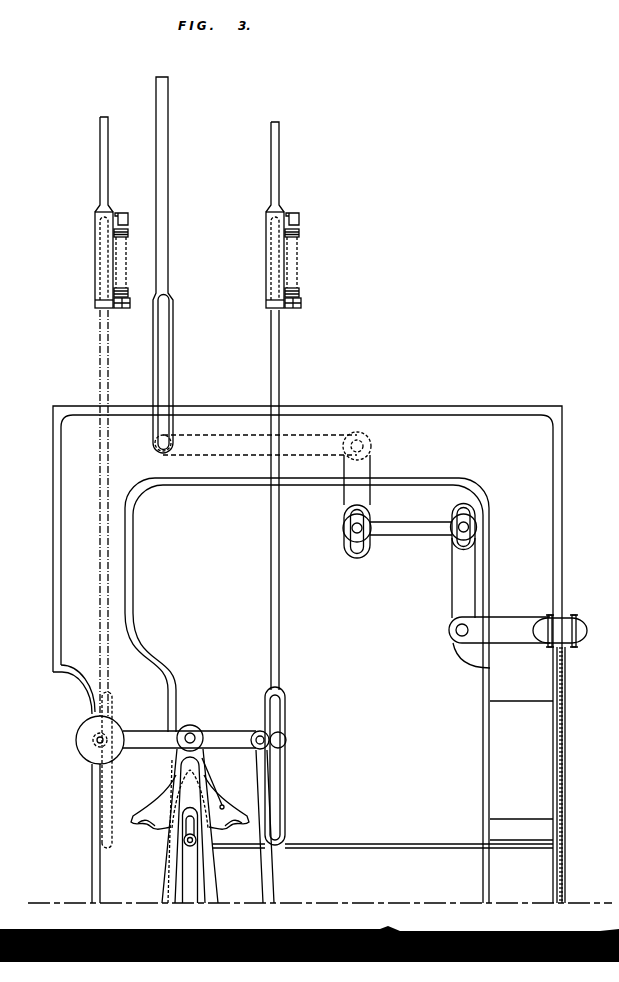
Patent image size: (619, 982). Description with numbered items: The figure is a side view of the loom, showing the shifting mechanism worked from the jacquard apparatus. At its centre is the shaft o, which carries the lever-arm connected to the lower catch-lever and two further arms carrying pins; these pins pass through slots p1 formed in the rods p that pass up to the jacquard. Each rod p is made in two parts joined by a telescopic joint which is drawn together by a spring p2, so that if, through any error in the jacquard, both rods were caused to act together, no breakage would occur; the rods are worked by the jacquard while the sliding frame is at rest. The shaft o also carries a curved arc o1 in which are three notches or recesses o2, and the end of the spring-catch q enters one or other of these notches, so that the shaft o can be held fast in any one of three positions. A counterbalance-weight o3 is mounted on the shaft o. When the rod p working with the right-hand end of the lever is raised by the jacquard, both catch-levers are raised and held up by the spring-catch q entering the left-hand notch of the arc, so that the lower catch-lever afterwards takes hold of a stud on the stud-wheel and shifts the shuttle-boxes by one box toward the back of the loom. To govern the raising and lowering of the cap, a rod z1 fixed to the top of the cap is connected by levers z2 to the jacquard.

The rods p is at (190, 510).
The slots p1 is at (280, 795).
The spring p2 is at (204, 260).
The shaft o is at (190, 738).
The curved arc o1 is at (190, 793).
The notches o2 is at (196, 785).
The counterbalance-weight o3 is at (100, 740).
The rod z1 is at (518, 720).
The levers z2 is at (410, 506).
The spring-catch q is at (382, 839).